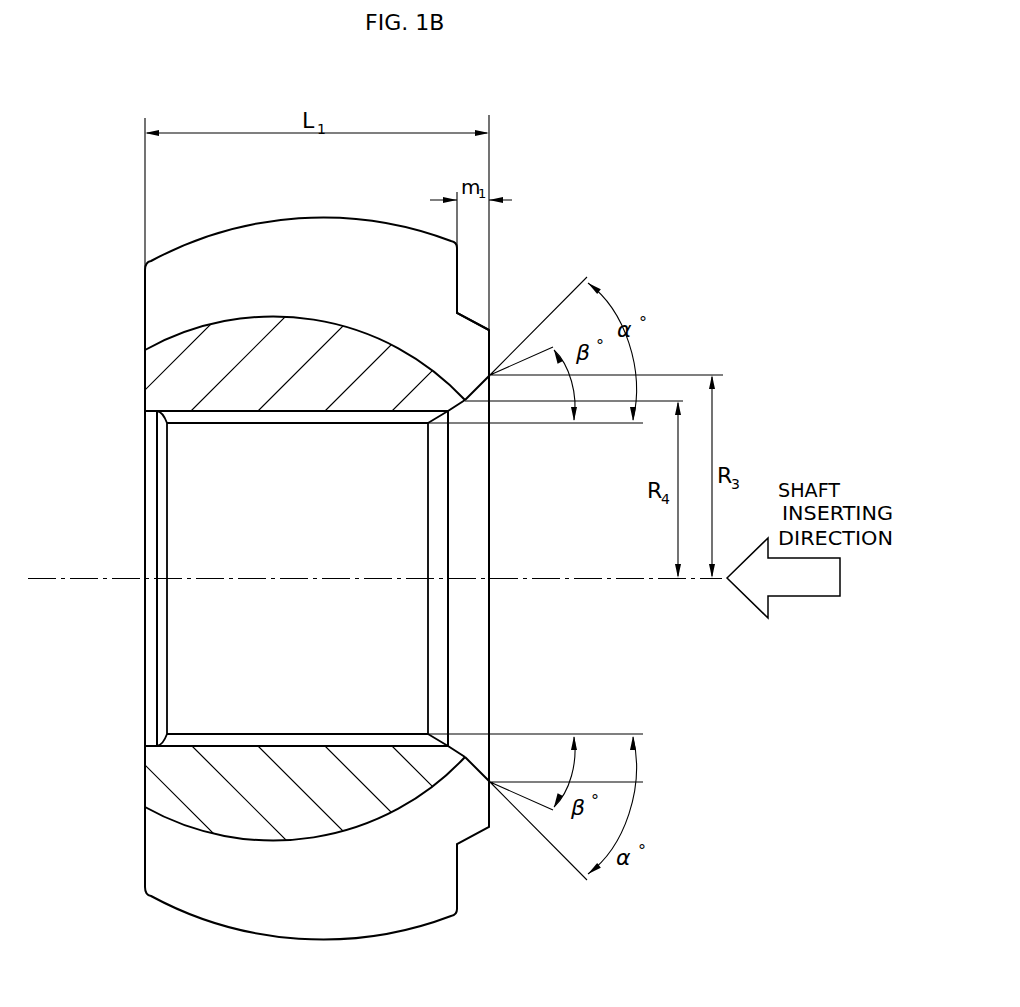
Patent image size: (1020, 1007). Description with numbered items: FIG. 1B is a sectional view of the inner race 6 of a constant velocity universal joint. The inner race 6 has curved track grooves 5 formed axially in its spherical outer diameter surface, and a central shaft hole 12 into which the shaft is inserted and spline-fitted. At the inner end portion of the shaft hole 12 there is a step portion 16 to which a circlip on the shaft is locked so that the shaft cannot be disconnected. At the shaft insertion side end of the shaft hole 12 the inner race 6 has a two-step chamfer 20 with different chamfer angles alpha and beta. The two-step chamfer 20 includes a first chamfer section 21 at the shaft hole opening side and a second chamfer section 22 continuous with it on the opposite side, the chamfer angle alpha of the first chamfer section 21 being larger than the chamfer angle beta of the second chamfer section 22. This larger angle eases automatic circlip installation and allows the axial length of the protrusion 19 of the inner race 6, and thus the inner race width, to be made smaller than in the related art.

The track groove 5 is at (223, 323).
The inner race 6 is at (119, 370).
The shaft hole 12 is at (220, 421).
The step portion 16 is at (158, 423).
The protrusion 19 is at (473, 332).
The two-step chamfer 20 is at (474, 409).
The first chamfer section 21 is at (490, 384).
The second chamfer section 22 is at (451, 409).